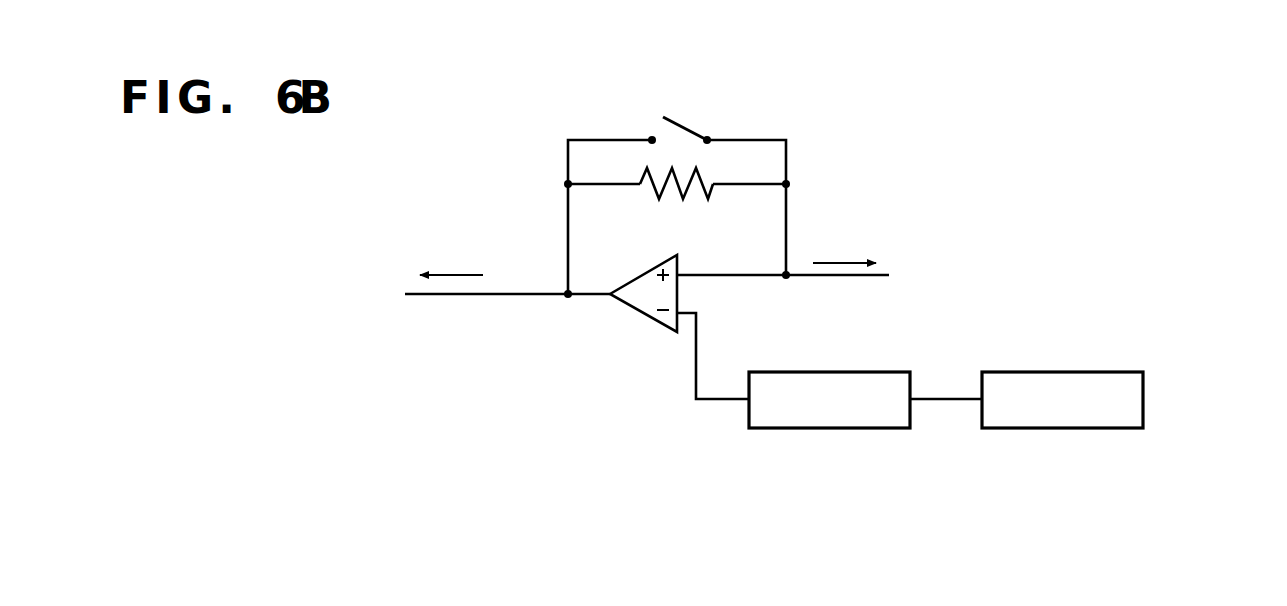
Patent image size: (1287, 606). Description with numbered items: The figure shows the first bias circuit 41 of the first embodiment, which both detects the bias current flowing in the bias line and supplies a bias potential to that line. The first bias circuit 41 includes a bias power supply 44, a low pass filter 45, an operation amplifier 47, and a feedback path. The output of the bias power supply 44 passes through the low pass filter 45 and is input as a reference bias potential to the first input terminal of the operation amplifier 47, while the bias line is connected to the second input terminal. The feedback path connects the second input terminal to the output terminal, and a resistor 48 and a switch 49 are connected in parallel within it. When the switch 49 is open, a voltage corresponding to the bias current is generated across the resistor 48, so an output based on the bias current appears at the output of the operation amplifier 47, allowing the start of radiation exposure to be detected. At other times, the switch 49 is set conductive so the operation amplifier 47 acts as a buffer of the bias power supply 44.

The first bias circuit 41 is at (926, 180).
The bias power supply 44 is at (1102, 372).
The low pass filter 45 is at (878, 372).
The operation amplifier 47 is at (647, 317).
The resistor 48 is at (711, 171).
The switch 49 is at (680, 70).